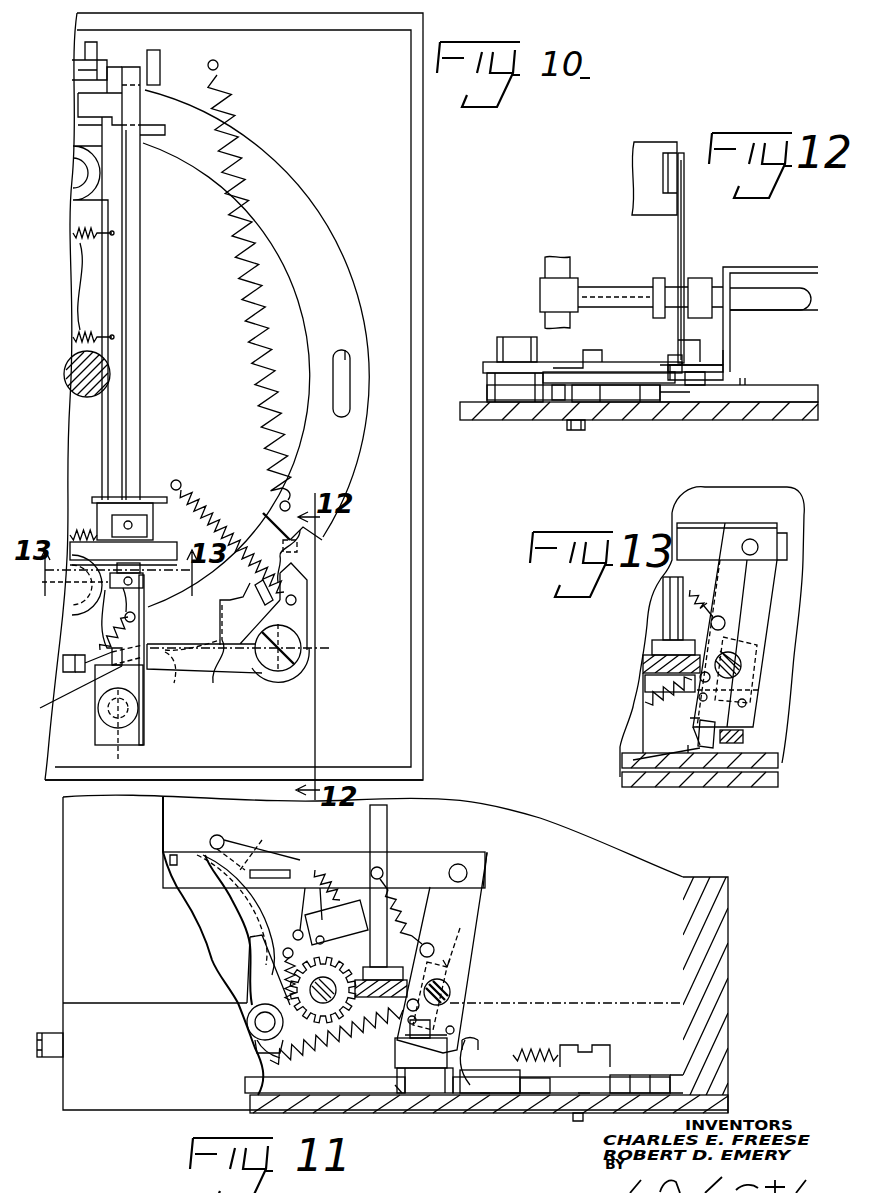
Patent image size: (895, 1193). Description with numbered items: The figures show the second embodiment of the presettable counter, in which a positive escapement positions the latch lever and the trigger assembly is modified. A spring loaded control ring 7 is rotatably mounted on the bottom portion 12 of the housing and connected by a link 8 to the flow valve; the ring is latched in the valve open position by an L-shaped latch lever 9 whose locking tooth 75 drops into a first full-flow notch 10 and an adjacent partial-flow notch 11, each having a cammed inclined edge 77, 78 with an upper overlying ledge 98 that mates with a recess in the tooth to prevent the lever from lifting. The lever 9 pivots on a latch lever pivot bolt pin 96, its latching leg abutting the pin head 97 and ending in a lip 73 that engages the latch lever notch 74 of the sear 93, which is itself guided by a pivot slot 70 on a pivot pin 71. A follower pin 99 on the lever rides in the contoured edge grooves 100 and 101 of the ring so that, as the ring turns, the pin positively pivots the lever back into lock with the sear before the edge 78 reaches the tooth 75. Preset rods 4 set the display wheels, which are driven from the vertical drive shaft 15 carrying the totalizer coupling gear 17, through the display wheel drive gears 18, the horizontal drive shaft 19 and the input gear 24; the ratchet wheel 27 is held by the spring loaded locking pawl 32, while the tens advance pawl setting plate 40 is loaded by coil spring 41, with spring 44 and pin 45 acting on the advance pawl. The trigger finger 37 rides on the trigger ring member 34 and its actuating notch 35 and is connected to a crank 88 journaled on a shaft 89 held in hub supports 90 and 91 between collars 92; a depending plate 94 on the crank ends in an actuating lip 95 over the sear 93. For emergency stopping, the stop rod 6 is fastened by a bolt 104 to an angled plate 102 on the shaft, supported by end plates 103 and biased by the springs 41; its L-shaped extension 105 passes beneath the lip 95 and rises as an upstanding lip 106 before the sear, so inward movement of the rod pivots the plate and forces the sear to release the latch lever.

In FIG. 11, the preset rod 4 is at (42, 1035).
In FIG. 10, the emergency stop rod 6 is at (78, 74).
In FIG. 10, the control ring 7 is at (336, 284).
In FIG. 12, the control ring 7 is at (800, 392).
In FIG. 13, the control ring 7 is at (780, 768).
In FIG. 11, the control ring 7 is at (669, 1080).
In FIG. 10, the link 8 is at (352, 378).
In FIG. 10, the latch lever 9 is at (250, 690).
In FIG. 12, the latch lever 9 is at (531, 387).
In FIG. 11, the latch lever 9 is at (641, 1075).
In FIG. 10, the full-flow notch 10 is at (266, 512).
In FIG. 12, the full-flow notch 10 is at (665, 404).
In FIG. 10, the partial-flow notch 11 is at (238, 600).
In FIG. 11, the partial-flow notch 11 is at (553, 1062).
In FIG. 10, the bottom portion 12 is at (60, 772).
In FIG. 12, the bottom portion 12 is at (775, 422).
In FIG. 11, the bottom portion 12 is at (450, 1114).
In FIG. 10, the vertical drive shaft 15 is at (70, 378).
In FIG. 13, the vertical drive shaft 15 is at (668, 629).
In FIG. 11, the vertical drive shaft 15 is at (392, 830).
In FIG. 13, the totalizer coupling gear 17 is at (766, 784).
In FIG. 11, the display wheel drive gears 18 is at (400, 940).
In FIG. 11, the horizontal drive shaft 19 is at (320, 1012).
In FIG. 11, the input gear 24 is at (170, 868).
In FIG. 11, the ratchet wheel 27 is at (228, 894).
In FIG. 11, the locking pawl 32 is at (252, 978).
In FIG. 11, the trigger ring member 34 is at (250, 840).
In FIG. 11, the actuating notch 35 is at (160, 840).
In FIG. 10, the trigger finger 37 is at (70, 546).
In FIG. 12, the trigger finger 37 is at (680, 152).
In FIG. 13, the trigger finger 37 is at (700, 540).
In FIG. 11, the trigger finger 37 is at (340, 854).
In FIG. 11, the pawl setting plate 40 is at (300, 890).
In FIG. 10, the coil spring 41 is at (74, 290).
In FIG. 13, the coil spring 41 is at (645, 691).
In FIG. 11, the coil spring 41 is at (256, 1052).
In FIG. 11, the spring 44 is at (335, 918).
In FIG. 11, the pin 45 is at (217, 835).
In FIG. 10, the pivot slot 70 is at (117, 745).
In FIG. 10, the pivot pin 71 is at (112, 710).
In FIG. 12, the pivot pin 71 is at (500, 338).
In FIG. 11, the pivot pin 71 is at (448, 1042).
In FIG. 10, the lip 73 is at (105, 652).
In FIG. 10, the latch lever notch 74 is at (71, 691).
In FIG. 10, the locking tooth 75 is at (310, 583).
In FIG. 12, the locking tooth 75 is at (616, 403).
In FIG. 10, the cammed inclined edge 77 is at (220, 631).
In FIG. 11, the cammed inclined edge 77 is at (516, 1098).
In FIG. 10, the cammed inclined edge 78 is at (300, 551).
In FIG. 12, the cammed inclined edge 78 is at (645, 403).
In FIG. 10, the crank 88 is at (196, 504).
In FIG. 12, the crank 88 is at (685, 242).
In FIG. 13, the crank 88 is at (768, 590).
In FIG. 11, the crank 88 is at (482, 913).
In FIG. 10, the shaft 89 is at (145, 598).
In FIG. 12, the shaft 89 is at (765, 308).
In FIG. 13, the shaft 89 is at (743, 668).
In FIG. 11, the shaft 89 is at (450, 994).
In FIG. 12, the hub support 90 is at (540, 284).
In FIG. 10, the hub support 91 is at (140, 110).
In FIG. 10, the collar 92 is at (146, 582).
In FIG. 12, the collar 92 is at (660, 278).
In FIG. 13, the collar 92 is at (760, 690).
In FIG. 11, the collar 92 is at (448, 981).
In FIG. 10, the sear 93 is at (156, 713).
In FIG. 12, the sear 93 is at (474, 367).
In FIG. 13, the sear 93 is at (758, 740).
In FIG. 11, the sear 93 is at (388, 1064).
In FIG. 10, the plate 94 is at (147, 526).
In FIG. 12, the plate 94 is at (686, 346).
In FIG. 13, the plate 94 is at (697, 712).
In FIG. 11, the plate 94 is at (470, 1001).
In FIG. 10, the actuating lip 95 is at (78, 600).
In FIG. 12, the actuating lip 95 is at (700, 369).
In FIG. 13, the actuating lip 95 is at (633, 760).
In FIG. 11, the actuating lip 95 is at (480, 1049).
In FIG. 11, the latch lever pivot bolt pin 96 is at (582, 1096).
In FIG. 10, the pin head 97 is at (304, 662).
In FIG. 12, the pin head 97 is at (593, 350).
In FIG. 11, the pin head 97 is at (606, 1045).
In FIG. 10, the overlying ledge 98 is at (284, 546).
In FIG. 12, the overlying ledge 98 is at (665, 370).
In FIG. 11, the overlying ledge 98 is at (532, 1052).
In FIG. 10, the follower pin 99 is at (168, 680).
In FIG. 11, the follower pin 99 is at (484, 1096).
In FIG. 10, the edge groove 100 is at (150, 640).
In FIG. 11, the edge groove 100 is at (466, 1072).
In FIG. 10, the edge groove 101 is at (70, 655).
In FIG. 11, the edge groove 101 is at (386, 1086).
In FIG. 10, the angled plate 102 is at (140, 316).
In FIG. 12, the angled plate 102 is at (796, 266).
In FIG. 13, the angled plate 102 is at (738, 634).
In FIG. 11, the angled plate 102 is at (442, 971).
In FIG. 10, the end plate 103 is at (140, 150).
In FIG. 12, the end plate 103 is at (730, 352).
In FIG. 10, the bolt 104 is at (110, 62).
In FIG. 10, the L-shaped extension 105 is at (92, 499).
In FIG. 12, the L-shaped extension 105 is at (700, 412).
In FIG. 13, the L-shaped extension 105 is at (704, 760).
In FIG. 10, the upstanding lip 106 is at (63, 580).
In FIG. 12, the upstanding lip 106 is at (670, 355).
In FIG. 13, the upstanding lip 106 is at (690, 789).